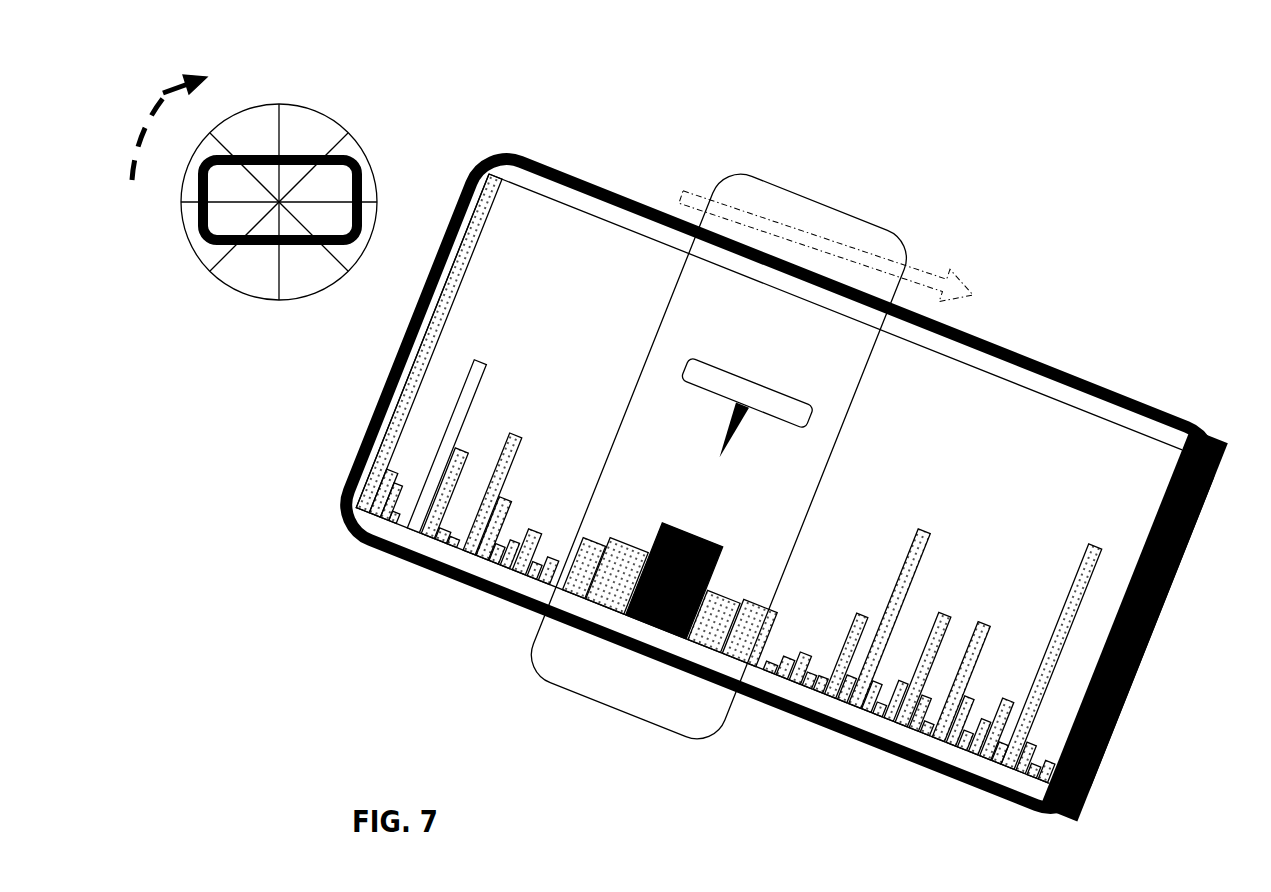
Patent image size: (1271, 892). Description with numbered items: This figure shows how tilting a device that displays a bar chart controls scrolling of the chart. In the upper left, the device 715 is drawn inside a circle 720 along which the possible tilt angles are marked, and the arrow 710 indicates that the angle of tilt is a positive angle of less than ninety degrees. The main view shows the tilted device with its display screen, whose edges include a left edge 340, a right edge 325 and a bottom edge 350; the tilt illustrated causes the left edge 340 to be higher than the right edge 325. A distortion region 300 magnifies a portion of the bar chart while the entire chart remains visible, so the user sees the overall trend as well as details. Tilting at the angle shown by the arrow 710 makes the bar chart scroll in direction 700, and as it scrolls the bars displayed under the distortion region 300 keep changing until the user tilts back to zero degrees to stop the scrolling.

The distortion region 300 is at (818, 488).
The right edge 325 is at (1140, 667).
The left edge 340 is at (378, 402).
The bottom edge 350 is at (465, 590).
The direction of scrolling 700 is at (822, 238).
The arrow 710 is at (170, 82).
The device 715 is at (362, 177).
The circle 720 is at (308, 103).